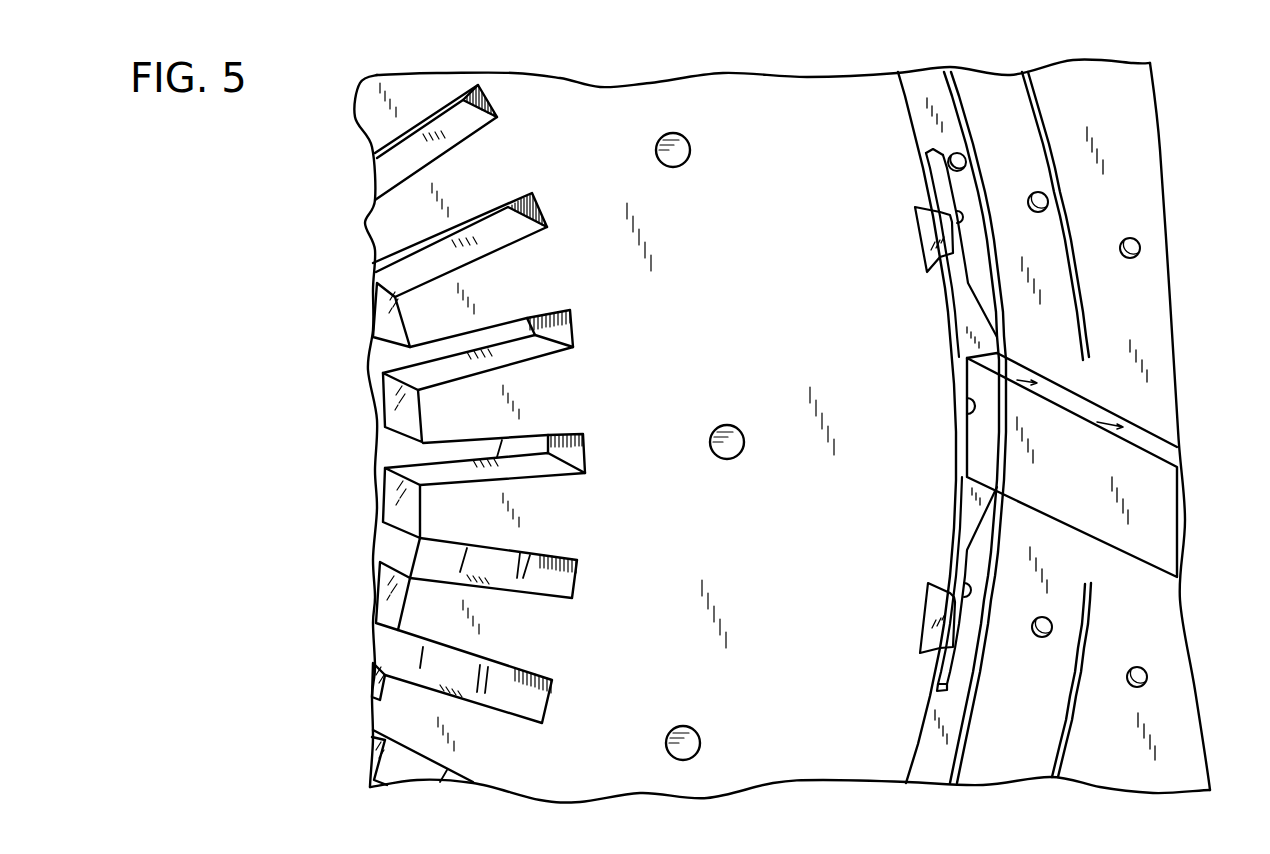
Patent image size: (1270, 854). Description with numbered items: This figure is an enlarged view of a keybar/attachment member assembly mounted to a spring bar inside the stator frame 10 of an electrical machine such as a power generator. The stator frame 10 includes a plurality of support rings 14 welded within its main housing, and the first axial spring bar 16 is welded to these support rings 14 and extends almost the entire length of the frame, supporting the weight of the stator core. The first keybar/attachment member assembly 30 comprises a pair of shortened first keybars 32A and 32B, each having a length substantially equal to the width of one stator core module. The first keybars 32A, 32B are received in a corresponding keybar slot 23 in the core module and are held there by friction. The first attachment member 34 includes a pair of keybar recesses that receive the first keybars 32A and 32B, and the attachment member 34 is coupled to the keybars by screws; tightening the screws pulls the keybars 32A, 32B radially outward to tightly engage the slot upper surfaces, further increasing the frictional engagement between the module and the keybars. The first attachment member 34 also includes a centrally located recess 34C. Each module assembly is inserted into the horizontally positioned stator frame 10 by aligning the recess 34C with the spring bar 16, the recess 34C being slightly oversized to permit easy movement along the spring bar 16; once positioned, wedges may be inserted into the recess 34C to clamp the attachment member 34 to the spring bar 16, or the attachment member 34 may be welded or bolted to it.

The stator frame 10 is at (1173, 182).
The support rings 14 is at (977, 273).
The first axial spring bar 16 is at (1085, 476).
The keybar slot 23 is at (923, 247).
The first keybar/attachment member assembly 30 is at (860, 488).
The first keybar 32A is at (920, 228).
The first keybar 32B is at (920, 638).
The first attachment member 34 is at (963, 502).
The recess 34C is at (967, 398).